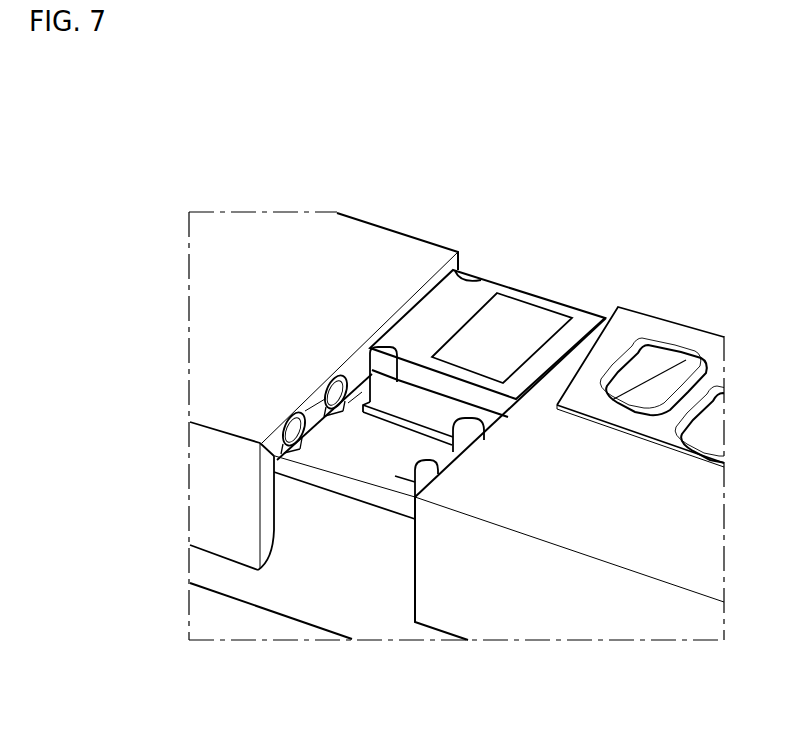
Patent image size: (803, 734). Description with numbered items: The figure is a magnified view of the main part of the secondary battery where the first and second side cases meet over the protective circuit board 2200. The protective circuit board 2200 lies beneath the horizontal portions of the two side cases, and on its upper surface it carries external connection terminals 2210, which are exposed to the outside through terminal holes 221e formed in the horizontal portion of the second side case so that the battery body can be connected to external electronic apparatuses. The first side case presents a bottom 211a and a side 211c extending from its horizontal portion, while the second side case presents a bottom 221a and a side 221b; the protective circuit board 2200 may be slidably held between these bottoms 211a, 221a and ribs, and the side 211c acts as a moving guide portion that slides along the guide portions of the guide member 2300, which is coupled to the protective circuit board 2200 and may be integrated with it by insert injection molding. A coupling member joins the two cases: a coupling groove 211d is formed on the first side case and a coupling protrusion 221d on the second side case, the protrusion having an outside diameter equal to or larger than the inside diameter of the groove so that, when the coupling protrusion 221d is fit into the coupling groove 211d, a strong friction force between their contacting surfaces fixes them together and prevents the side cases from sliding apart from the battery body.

The bottom 211a is at (371, 252).
The side 211c is at (362, 368).
The coupling groove 211d is at (286, 414).
The protective circuit board 2200 is at (463, 293).
The external connection terminals 2210 is at (530, 317).
The bottom 221a is at (645, 547).
The side 221b is at (528, 610).
The coupling protrusion 221d is at (417, 467).
The terminal holes 221e is at (690, 376).
The guide member 2300 is at (212, 572).